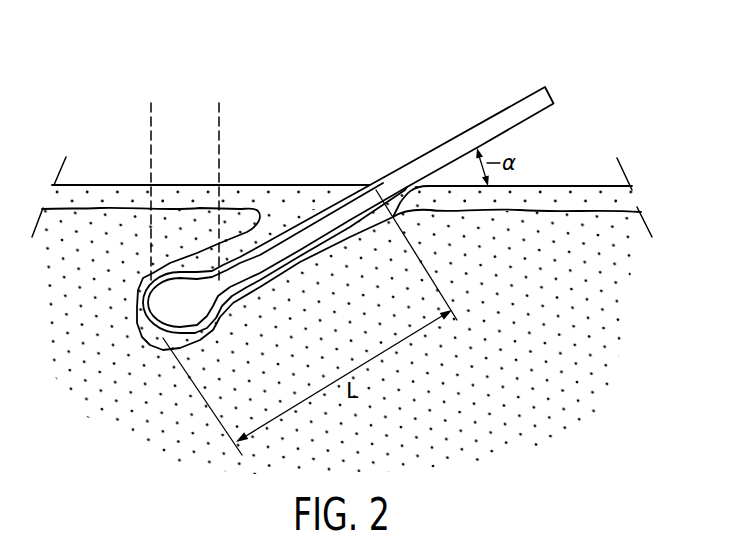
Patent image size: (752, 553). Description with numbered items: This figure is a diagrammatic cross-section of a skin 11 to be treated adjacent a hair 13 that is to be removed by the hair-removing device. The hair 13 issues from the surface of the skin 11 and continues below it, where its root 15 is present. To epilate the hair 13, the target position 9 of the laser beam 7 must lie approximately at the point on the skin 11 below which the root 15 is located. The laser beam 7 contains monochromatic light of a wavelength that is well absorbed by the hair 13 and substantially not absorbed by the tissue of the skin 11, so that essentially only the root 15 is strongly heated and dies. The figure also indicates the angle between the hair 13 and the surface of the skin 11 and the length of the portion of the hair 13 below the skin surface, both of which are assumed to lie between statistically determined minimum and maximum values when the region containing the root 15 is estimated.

The laser beam 7 is at (224, 120).
The target position 9 is at (182, 185).
The skin 11 is at (586, 184).
The hair 13 is at (400, 167).
The root 15 is at (167, 301).